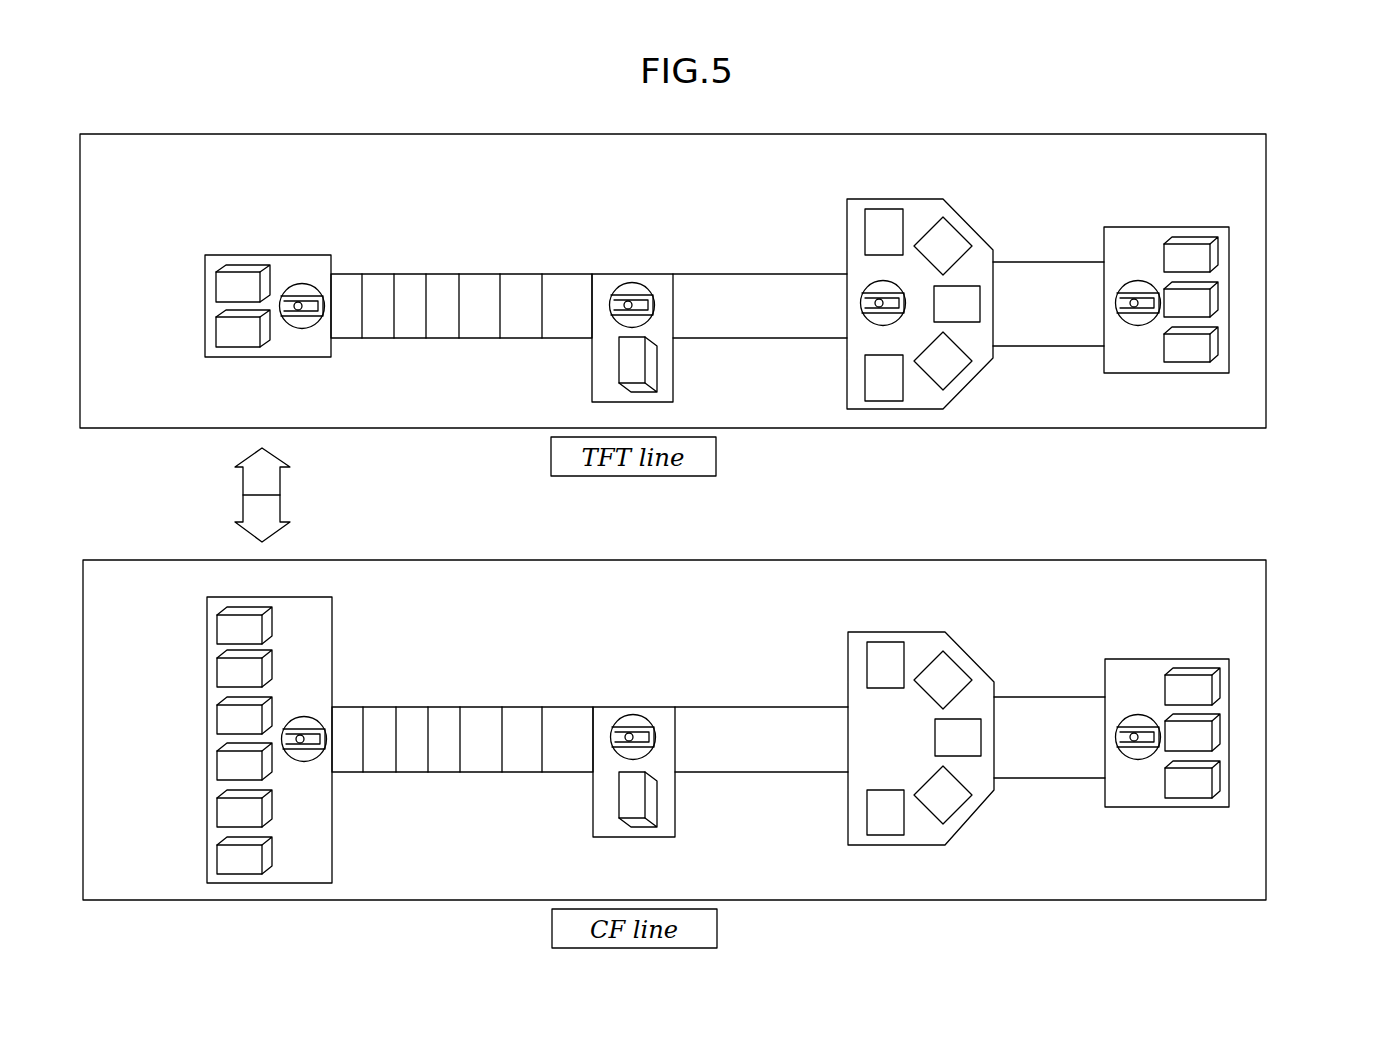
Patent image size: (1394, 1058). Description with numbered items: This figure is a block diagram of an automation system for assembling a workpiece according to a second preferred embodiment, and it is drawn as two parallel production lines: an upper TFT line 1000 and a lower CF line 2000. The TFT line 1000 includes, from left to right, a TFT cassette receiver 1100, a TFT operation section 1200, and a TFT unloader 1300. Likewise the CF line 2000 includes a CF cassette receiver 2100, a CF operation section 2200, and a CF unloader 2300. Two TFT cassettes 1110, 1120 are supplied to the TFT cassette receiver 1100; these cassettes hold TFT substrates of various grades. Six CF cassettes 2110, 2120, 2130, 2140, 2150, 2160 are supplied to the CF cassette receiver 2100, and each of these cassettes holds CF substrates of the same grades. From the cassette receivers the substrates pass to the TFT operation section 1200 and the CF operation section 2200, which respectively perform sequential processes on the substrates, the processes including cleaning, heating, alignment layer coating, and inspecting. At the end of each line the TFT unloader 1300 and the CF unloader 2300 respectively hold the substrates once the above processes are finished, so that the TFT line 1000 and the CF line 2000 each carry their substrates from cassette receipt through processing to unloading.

The TFT line 1000 is at (1266, 244).
The TFT cassette receiver 1100 is at (222, 267).
The TFT cassette 1110 is at (217, 290).
The TFT cassette 1120 is at (217, 336).
The TFT operation section 1200 is at (560, 274).
The TFT unloader 1300 is at (1142, 227).
The CF line 2000 is at (1266, 718).
The CF cassette receiver 2100 is at (274, 740).
The CF cassette 2110 is at (217, 628).
The CF cassette 2120 is at (217, 675).
The CF cassette 2130 is at (217, 721).
The CF cassette 2140 is at (217, 768).
The CF cassette 2150 is at (217, 815).
The CF cassette 2160 is at (217, 861).
The CF operation section 2200 is at (570, 707).
The CF unloader 2300 is at (1142, 659).